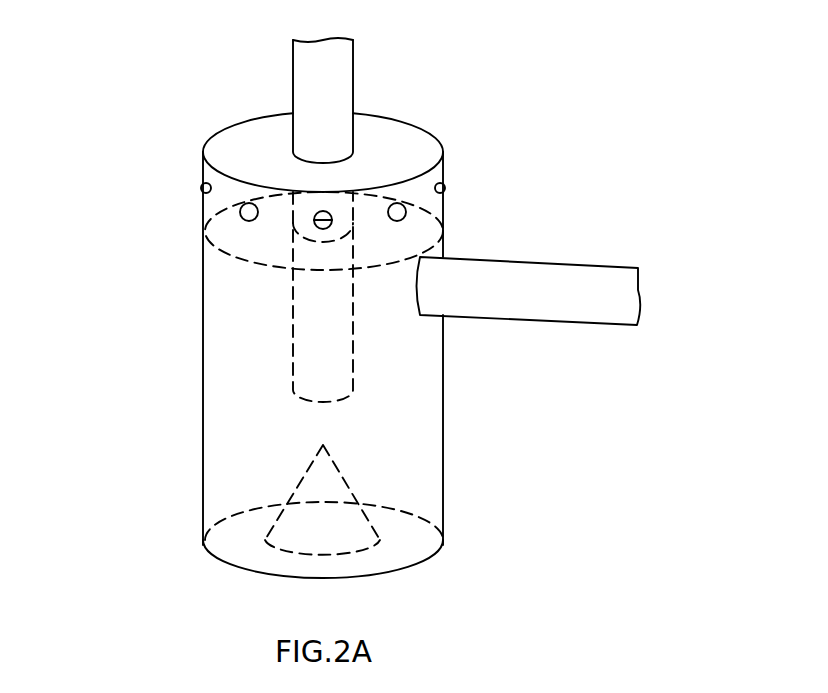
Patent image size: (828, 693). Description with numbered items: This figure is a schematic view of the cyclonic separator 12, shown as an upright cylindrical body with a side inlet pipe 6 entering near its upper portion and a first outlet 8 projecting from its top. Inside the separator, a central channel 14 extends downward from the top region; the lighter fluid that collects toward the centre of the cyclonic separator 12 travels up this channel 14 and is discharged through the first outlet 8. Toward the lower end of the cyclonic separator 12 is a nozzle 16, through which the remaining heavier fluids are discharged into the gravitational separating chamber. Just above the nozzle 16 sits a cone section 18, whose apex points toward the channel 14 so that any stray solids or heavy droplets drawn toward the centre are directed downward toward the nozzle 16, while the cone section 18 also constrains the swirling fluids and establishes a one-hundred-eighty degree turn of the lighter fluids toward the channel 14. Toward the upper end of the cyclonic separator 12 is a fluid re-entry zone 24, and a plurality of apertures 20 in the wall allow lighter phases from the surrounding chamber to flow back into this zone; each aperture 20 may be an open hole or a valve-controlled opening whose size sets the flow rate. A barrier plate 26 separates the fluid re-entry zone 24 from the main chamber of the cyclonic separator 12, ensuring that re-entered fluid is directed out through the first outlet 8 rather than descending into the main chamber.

The inlet pipe 6 is at (540, 303).
The first outlet 8 is at (337, 85).
The cyclonic separator 12 is at (557, 138).
The channel 14 is at (290, 335).
The nozzle 16 is at (410, 542).
The cone section 18 is at (298, 480).
The aperture 20 is at (201, 188).
The fluid re-entry zone 24 is at (422, 185).
The barrier plate 26 is at (203, 233).